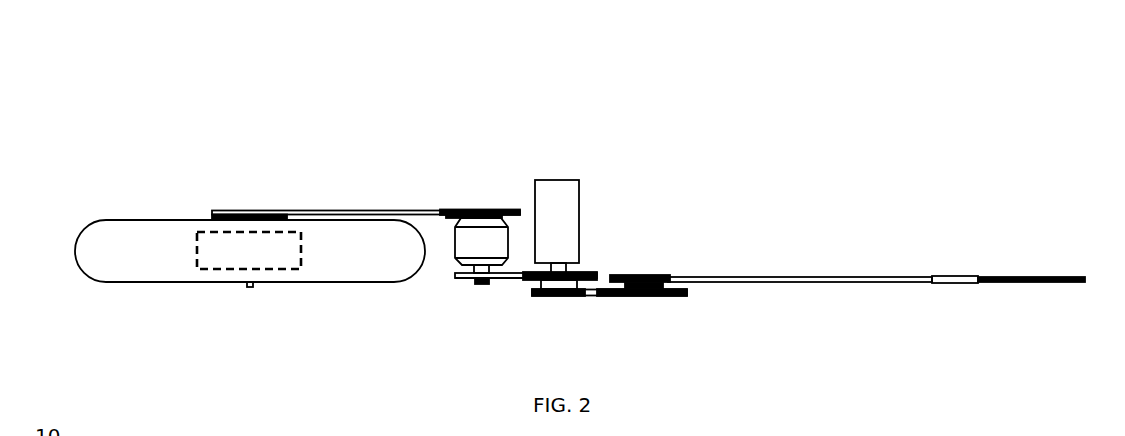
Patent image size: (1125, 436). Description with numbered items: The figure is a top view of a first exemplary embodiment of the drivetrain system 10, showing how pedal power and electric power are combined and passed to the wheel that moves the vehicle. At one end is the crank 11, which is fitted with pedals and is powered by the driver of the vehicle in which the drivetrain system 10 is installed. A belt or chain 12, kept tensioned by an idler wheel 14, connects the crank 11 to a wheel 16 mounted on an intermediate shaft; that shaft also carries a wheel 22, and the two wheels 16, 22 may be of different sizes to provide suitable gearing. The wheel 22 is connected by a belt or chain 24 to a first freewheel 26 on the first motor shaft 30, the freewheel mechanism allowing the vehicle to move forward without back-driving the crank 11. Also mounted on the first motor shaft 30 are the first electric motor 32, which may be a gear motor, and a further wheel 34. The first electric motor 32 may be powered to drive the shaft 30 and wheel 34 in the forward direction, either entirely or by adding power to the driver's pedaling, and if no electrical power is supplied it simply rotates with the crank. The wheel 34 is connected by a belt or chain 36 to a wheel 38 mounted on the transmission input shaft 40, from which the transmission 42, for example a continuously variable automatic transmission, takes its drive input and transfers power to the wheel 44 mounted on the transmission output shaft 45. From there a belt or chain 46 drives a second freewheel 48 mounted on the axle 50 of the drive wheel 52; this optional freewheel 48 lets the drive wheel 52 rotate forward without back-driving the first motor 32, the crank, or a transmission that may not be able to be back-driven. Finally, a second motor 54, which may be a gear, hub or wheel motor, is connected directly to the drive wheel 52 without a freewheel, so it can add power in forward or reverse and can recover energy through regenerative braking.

The drivetrain system 10 is at (128, 94).
The crank 11 is at (1048, 277).
The belt or chain 12 is at (812, 277).
The idler wheel 14 is at (955, 277).
The wheel 16 is at (670, 275).
The wheel 22 is at (670, 297).
The belt or chain 24 is at (595, 297).
The first freewheel 26 is at (538, 297).
The first motor shaft 30 is at (566, 268).
The first electric motor 32 is at (563, 179).
The wheel 34 is at (594, 272).
The belt or chain 36 is at (513, 280).
The wheel 38 is at (467, 280).
The transmission input shaft 40 is at (483, 285).
The transmission 42 is at (455, 252).
The wheel 44 is at (462, 210).
The transmission output shaft 45 is at (482, 210).
The belt or chain 46 is at (410, 210).
The second freewheel 48 is at (227, 212).
The axle 50 is at (252, 287).
The drive wheel 52 is at (120, 220).
The second motor 54 is at (215, 270).